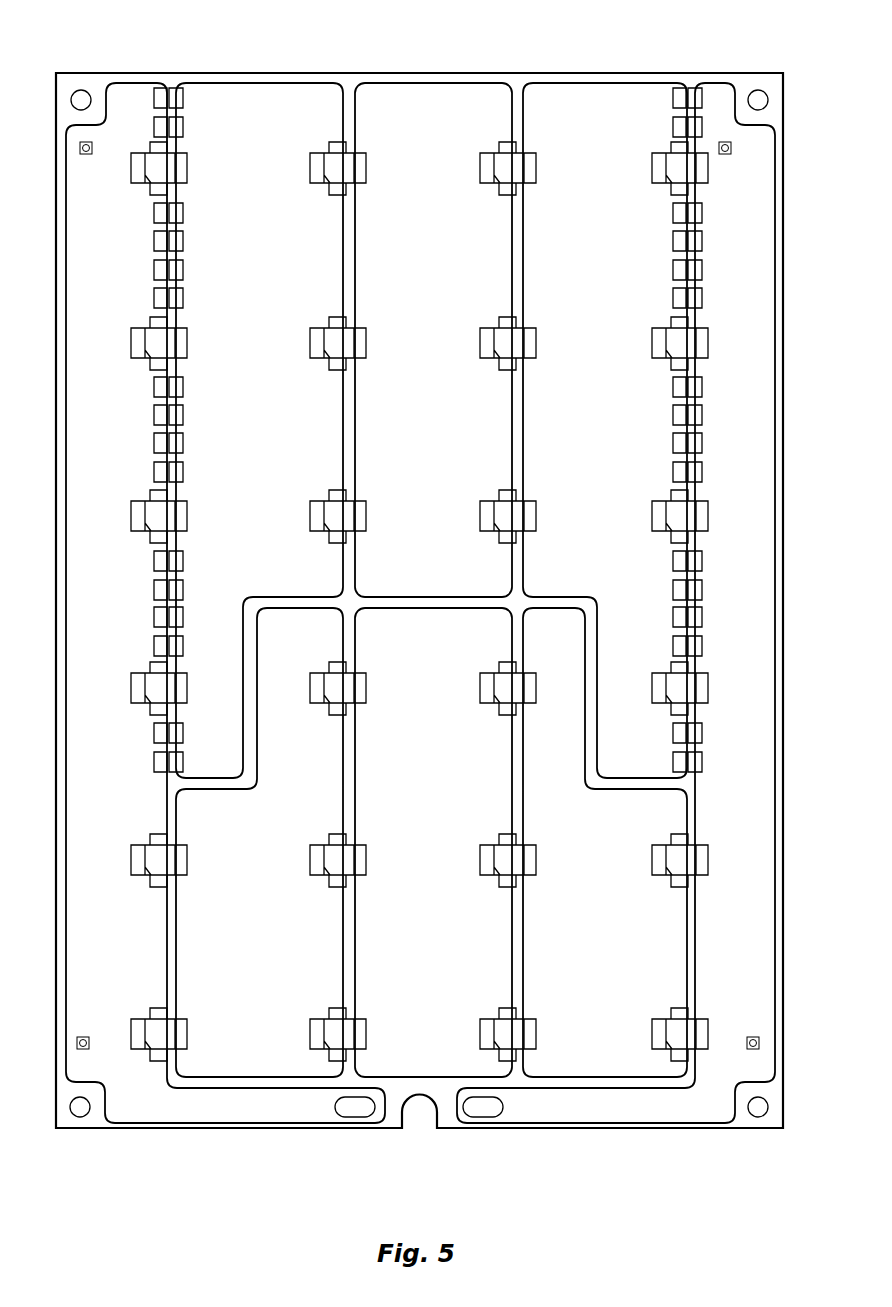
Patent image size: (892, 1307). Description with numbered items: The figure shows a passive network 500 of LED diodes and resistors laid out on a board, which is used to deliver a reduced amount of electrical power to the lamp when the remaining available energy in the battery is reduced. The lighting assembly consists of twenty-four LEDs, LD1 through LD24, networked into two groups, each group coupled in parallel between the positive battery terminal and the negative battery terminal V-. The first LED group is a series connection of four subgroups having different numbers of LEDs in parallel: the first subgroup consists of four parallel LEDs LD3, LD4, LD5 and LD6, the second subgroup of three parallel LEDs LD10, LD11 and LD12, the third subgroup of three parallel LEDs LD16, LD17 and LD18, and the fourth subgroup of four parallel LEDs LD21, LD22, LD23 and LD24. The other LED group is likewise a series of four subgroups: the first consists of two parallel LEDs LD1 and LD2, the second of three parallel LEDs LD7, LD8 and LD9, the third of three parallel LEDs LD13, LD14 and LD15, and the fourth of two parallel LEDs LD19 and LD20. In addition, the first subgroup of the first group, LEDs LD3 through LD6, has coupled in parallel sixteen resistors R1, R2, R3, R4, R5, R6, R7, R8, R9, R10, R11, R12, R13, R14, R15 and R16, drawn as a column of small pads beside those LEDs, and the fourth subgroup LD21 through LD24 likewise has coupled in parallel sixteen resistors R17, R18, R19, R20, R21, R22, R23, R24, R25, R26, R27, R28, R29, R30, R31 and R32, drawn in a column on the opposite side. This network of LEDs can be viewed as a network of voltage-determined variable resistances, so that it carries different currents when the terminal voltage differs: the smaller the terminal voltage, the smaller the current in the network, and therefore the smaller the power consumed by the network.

The passive network 500 is at (431, 26).
The battery terminal V− V- is at (334, 1107).
The resistor R1 is at (672, 98).
The resistor R2 is at (672, 127).
The resistor R3 is at (672, 213).
The resistor R4 is at (672, 241).
The resistor R5 is at (672, 270).
The resistor R6 is at (672, 298).
The resistor R7 is at (672, 387).
The resistor R8 is at (672, 415).
The resistor R9 is at (672, 443).
The resistor R10 is at (672, 472).
The resistor R11 is at (672, 561).
The resistor R12 is at (703, 590).
The resistor R13 is at (703, 617).
The resistor R14 is at (703, 646).
The resistor R15 is at (703, 733).
The resistor R16 is at (703, 762).
The resistor R17 is at (184, 98).
The resistor R18 is at (184, 127).
The resistor R19 is at (184, 213).
The resistor R20 is at (184, 241).
The resistor R21 is at (184, 270).
The resistor R22 is at (184, 298).
The resistor R23 is at (184, 387).
The resistor R24 is at (184, 415).
The resistor R25 is at (184, 443).
The resistor R26 is at (184, 472).
The resistor R27 is at (184, 561).
The resistor R28 is at (153, 590).
The resistor R29 is at (153, 617).
The resistor R30 is at (153, 646).
The resistor R31 is at (153, 733).
The resistor R32 is at (153, 762).
The LED LD1 is at (651, 1034).
The LED LD2 is at (651, 860).
The LED LD3 is at (708, 688).
The LED LD4 is at (651, 516).
The LED LD5 is at (651, 343).
The LED LD6 is at (651, 168).
The LED LD7 is at (479, 1034).
The LED LD8 is at (479, 860).
The LED LD9 is at (479, 688).
The LED LD10 is at (479, 516).
The LED LD11 is at (479, 343).
The LED LD12 is at (479, 168).
The LED LD13 is at (367, 1034).
The LED LD14 is at (367, 860).
The LED LD15 is at (367, 688).
The LED LD16 is at (367, 516).
The LED LD17 is at (367, 343).
The LED LD18 is at (367, 168).
The LED LD19 is at (188, 1034).
The LED LD20 is at (188, 860).
The LED LD21 is at (212, 673).
The LED LD22 is at (188, 516).
The LED LD23 is at (188, 343).
The LED LD24 is at (188, 168).